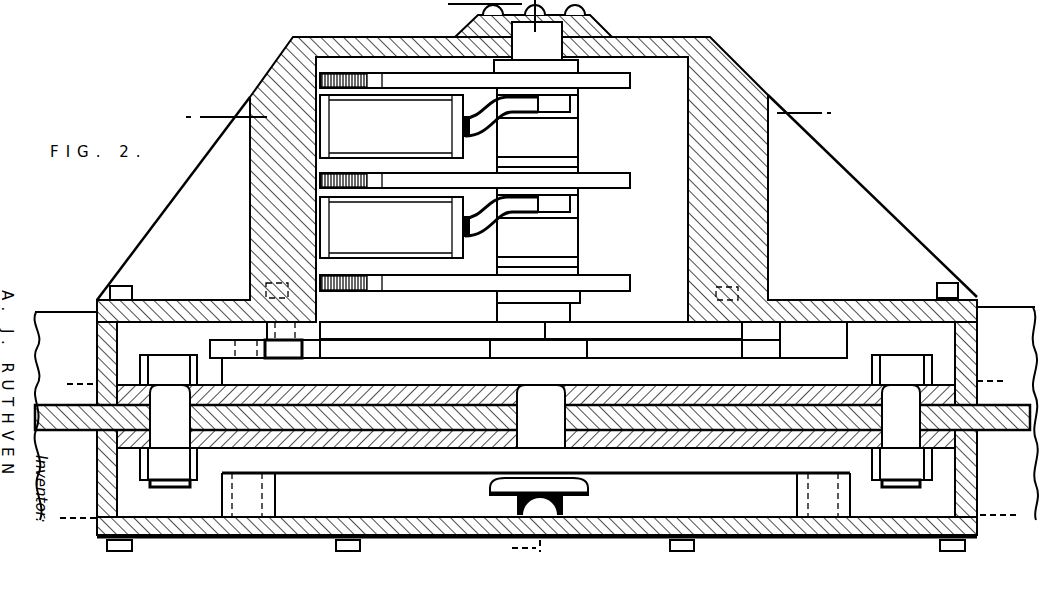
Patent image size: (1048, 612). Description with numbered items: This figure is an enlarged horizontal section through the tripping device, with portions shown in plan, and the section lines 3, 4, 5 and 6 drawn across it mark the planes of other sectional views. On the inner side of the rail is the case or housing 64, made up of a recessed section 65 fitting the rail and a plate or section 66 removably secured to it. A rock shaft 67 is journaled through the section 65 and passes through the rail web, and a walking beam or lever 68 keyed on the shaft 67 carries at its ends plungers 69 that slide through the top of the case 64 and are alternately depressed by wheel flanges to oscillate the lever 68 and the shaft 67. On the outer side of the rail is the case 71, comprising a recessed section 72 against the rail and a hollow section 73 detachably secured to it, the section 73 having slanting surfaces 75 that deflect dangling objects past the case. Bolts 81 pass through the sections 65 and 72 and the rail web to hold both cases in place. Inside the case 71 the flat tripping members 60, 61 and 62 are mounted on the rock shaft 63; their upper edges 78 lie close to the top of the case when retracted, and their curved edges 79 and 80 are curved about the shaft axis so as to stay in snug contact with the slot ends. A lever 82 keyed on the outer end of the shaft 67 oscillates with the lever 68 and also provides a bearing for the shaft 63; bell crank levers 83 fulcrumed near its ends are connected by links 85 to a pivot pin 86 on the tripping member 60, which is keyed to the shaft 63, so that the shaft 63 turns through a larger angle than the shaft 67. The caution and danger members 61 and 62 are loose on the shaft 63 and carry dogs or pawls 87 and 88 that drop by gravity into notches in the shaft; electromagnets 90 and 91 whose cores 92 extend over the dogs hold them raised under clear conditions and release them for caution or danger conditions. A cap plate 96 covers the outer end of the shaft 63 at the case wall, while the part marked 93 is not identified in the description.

The section line 3- 3 is at (537, 533).
The section line 4- 4 is at (534, 382).
The section line 5- 5 is at (506, 116).
The section line 6- 6 is at (485, 279).
The tripping member 60 is at (605, 275).
The caution tripping member 61 is at (628, 90).
The danger tripping member 62 is at (628, 188).
The rock shaft 63 is at (545, 52).
The case or housing 64 is at (983, 480).
The recessed section 65 is at (980, 442).
The plate or section 66 is at (976, 528).
The rock shaft 67 is at (539, 450).
The walking beam or lever 68 is at (677, 463).
The plungers 69 is at (257, 490).
The case 71 is at (250, 68).
The recessed section 72 is at (978, 332).
The hollow section 73 is at (722, 88).
The converging surfaces 75 is at (193, 210).
The upper edges 78 is at (434, 83).
The curved edge 79 is at (591, 85).
The curved edge 80 is at (345, 90).
The bolts 81 is at (165, 370).
The walking beam or lever 82 is at (495, 362).
The bell crank levers 83 is at (245, 338).
The links 85 is at (370, 330).
The pivot pin 86 is at (542, 332).
The dog or pawl 87 is at (553, 107).
The dog or pawl 88 is at (558, 205).
The electromagnet 90 is at (391, 126).
The electromagnet 91 is at (391, 227).
The cores 92 is at (520, 210).
The central column 93 is at (555, 150).
The cap plate 96 is at (473, 16).